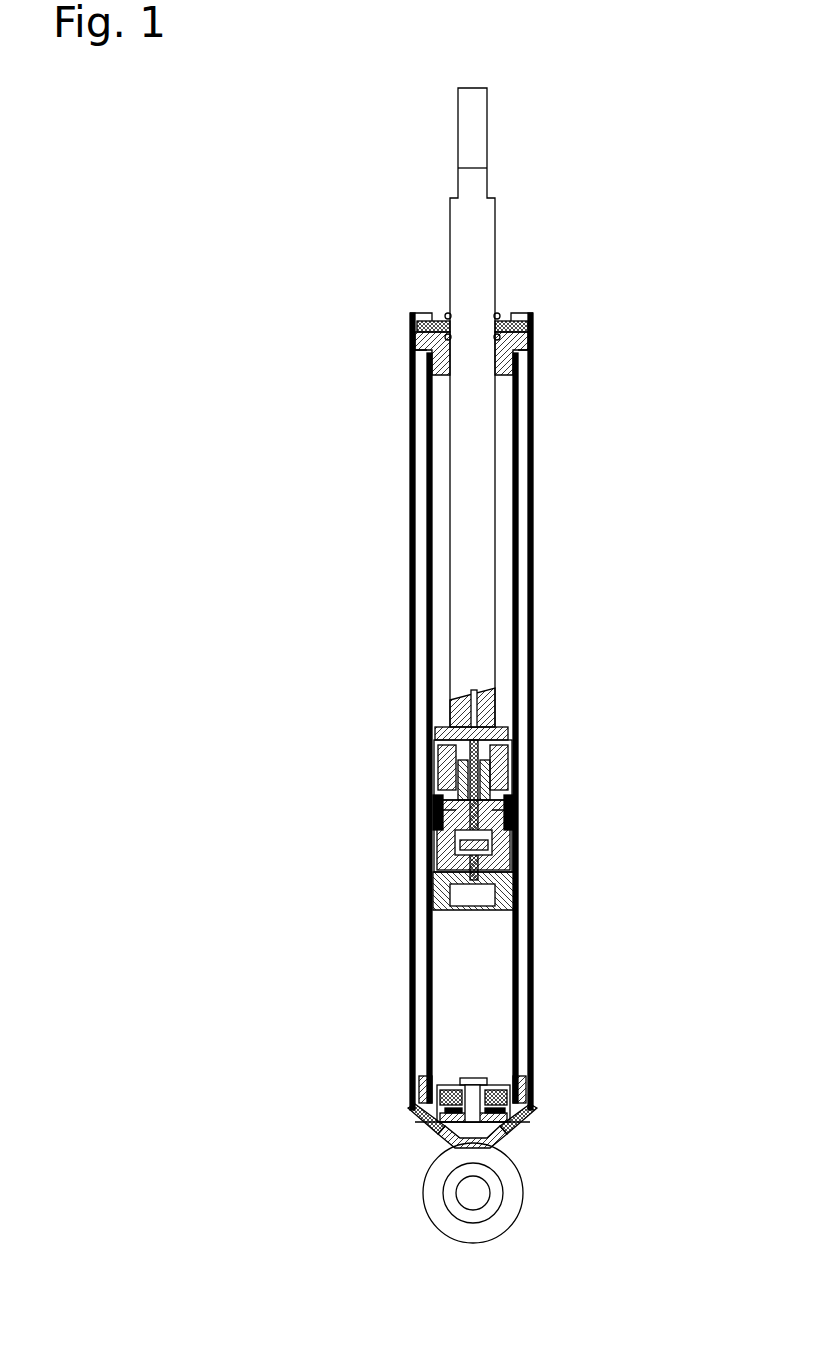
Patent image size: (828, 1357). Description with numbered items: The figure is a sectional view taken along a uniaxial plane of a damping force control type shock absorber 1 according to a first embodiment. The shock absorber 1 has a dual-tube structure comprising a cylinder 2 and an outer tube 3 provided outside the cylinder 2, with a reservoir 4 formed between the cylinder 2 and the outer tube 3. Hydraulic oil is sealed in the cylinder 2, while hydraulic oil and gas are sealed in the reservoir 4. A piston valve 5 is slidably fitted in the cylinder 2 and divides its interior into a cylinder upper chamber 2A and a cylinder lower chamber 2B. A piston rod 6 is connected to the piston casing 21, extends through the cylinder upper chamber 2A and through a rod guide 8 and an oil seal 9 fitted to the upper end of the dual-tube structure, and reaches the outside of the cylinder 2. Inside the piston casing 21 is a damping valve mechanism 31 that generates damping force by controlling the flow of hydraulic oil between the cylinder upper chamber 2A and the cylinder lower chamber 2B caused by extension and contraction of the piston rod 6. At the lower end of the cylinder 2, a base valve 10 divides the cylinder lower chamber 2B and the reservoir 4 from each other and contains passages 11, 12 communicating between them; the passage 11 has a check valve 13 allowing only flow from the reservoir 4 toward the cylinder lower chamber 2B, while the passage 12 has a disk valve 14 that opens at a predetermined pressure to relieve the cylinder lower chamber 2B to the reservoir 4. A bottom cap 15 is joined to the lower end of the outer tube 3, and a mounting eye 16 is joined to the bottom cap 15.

The damping force control type shock absorber 1 is at (598, 232).
The cylinder 2 is at (518, 458).
The cylinder upper chamber 2A is at (442, 502).
The cylinder lower chamber 2B is at (445, 968).
The outer tube 3 is at (532, 570).
The reservoir 4 is at (523, 513).
The piston valve 5 is at (515, 895).
The piston rod 6 is at (462, 244).
The rod guide 8 is at (523, 345).
The oil seal 9 is at (415, 327).
The base valve 10 is at (532, 1108).
The passage 11 is at (428, 1092).
The passage 12 is at (413, 1122).
The check valve 13 is at (512, 1090).
The disk valve 14 is at (530, 1125).
The bottom cap 15 is at (510, 1137).
The mounting eye 16 is at (507, 1212).
The piston casing 21 is at (435, 852).
The damping valve mechanism 31 is at (517, 825).